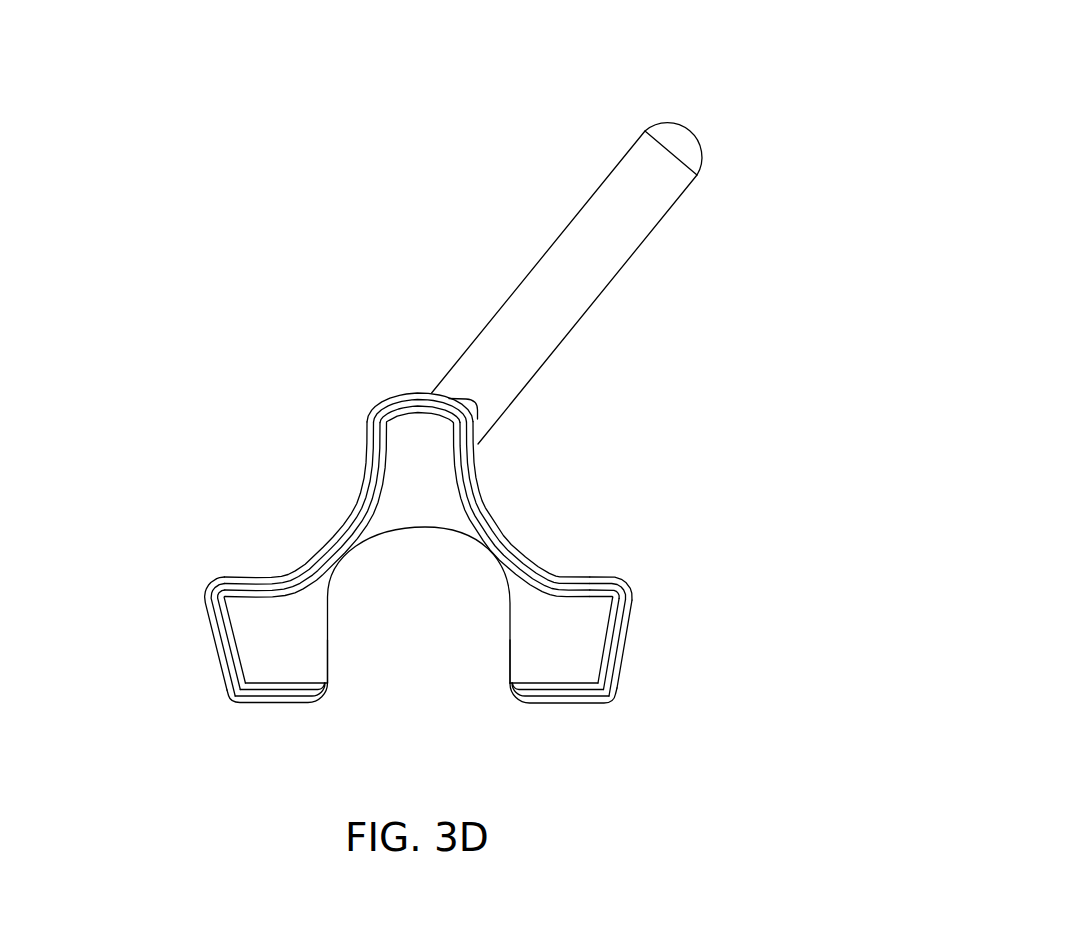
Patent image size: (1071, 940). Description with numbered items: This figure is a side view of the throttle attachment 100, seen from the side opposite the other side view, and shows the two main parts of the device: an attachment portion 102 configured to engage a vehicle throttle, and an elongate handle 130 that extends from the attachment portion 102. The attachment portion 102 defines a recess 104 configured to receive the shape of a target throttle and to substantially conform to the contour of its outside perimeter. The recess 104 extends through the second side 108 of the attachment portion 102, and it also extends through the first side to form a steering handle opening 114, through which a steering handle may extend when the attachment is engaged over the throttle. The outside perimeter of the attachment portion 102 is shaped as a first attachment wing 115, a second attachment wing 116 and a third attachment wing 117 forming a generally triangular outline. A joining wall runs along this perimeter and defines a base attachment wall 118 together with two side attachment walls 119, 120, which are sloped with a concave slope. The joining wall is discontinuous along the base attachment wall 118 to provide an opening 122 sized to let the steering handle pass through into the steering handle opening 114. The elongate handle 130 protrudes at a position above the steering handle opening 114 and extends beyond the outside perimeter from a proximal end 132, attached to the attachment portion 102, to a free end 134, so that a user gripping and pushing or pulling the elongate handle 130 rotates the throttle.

The throttle attachment 100 is at (352, 118).
The attachment portion 102 is at (603, 495).
The recess 104 is at (238, 687).
The second side 108 is at (620, 645).
The steering handle opening 114 is at (328, 637).
The first attachment wing 115 is at (204, 613).
The second attachment wing 116 is at (395, 393).
The third attachment wing 117 is at (630, 583).
The base attachment wall 118 is at (560, 704).
The side attachment wall 119 is at (346, 520).
The side attachment wall 120 is at (492, 513).
The opening 122 is at (350, 708).
The elongate handle 130 is at (581, 265).
The proximal end 132 is at (480, 446).
The free end 134 is at (688, 129).